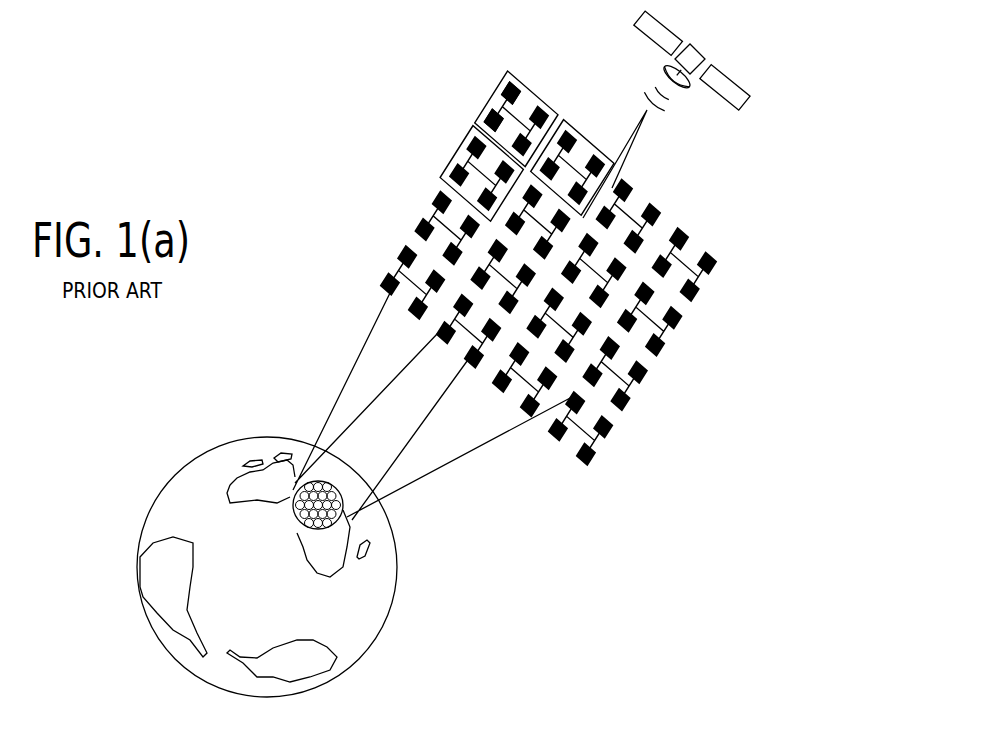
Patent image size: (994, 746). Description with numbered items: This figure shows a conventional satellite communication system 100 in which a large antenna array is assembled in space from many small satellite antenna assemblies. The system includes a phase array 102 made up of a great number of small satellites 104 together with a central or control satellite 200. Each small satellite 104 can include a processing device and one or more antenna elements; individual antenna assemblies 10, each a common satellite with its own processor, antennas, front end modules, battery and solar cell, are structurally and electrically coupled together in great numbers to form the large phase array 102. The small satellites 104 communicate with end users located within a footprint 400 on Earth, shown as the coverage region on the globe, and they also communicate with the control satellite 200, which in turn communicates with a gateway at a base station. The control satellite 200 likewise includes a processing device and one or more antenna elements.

The satellite communication system 100 is at (234, 131).
The antenna assembly 10 is at (504, 84).
The phase array 102 is at (654, 399).
The small satellite 104 is at (542, 79).
The control satellite 200 is at (728, 109).
The footprint 400 is at (297, 457).